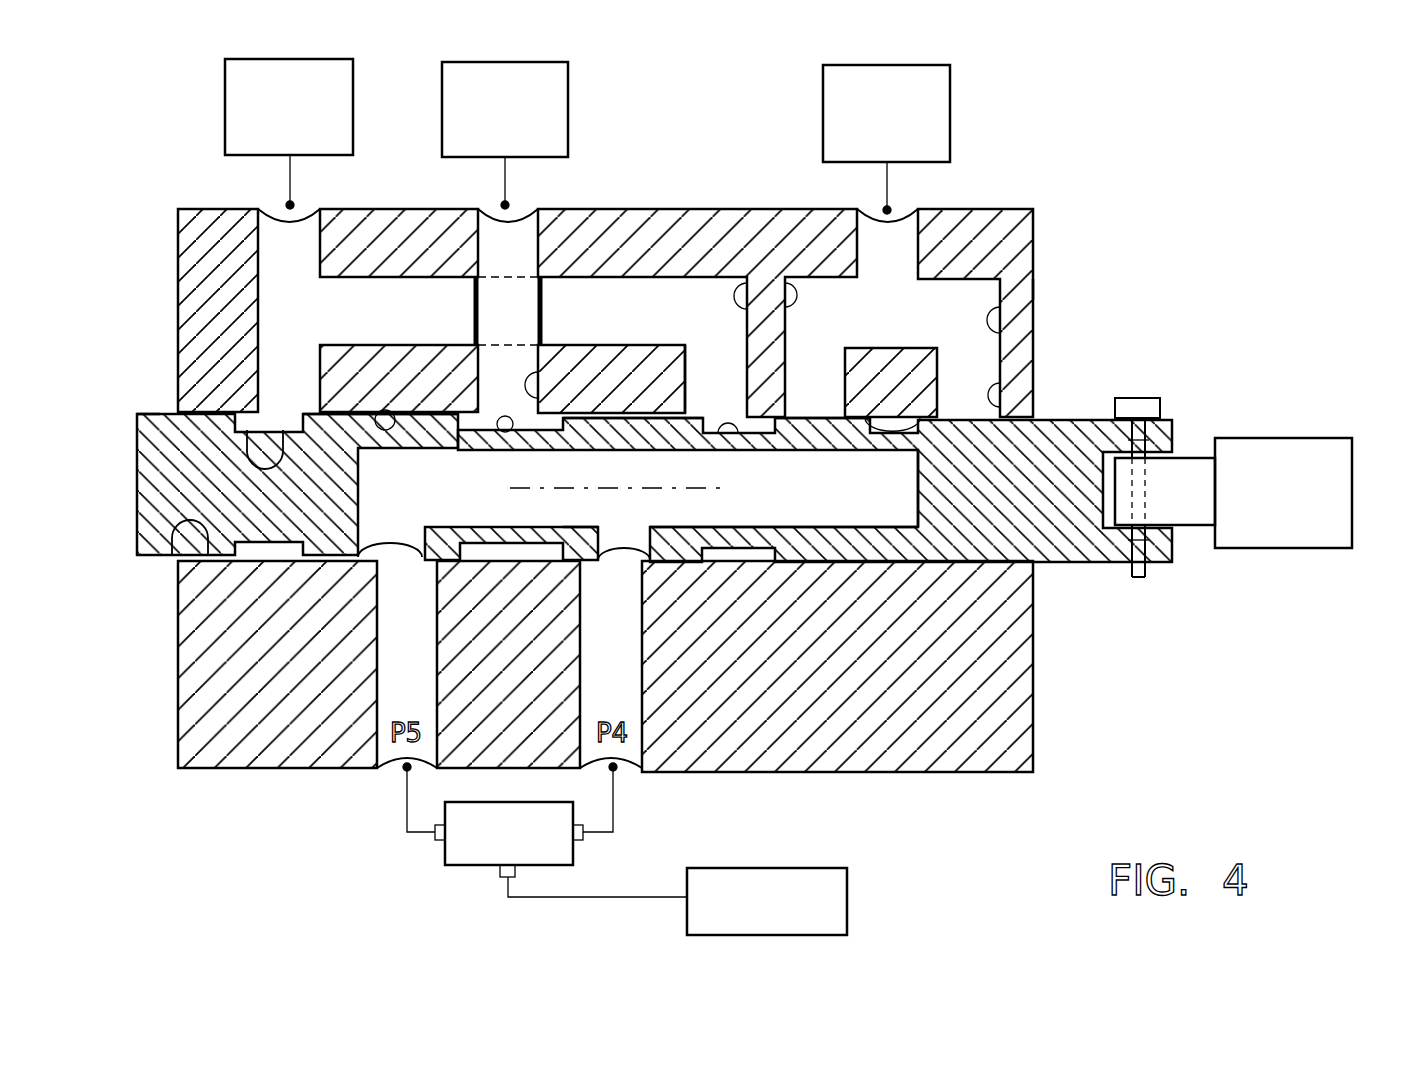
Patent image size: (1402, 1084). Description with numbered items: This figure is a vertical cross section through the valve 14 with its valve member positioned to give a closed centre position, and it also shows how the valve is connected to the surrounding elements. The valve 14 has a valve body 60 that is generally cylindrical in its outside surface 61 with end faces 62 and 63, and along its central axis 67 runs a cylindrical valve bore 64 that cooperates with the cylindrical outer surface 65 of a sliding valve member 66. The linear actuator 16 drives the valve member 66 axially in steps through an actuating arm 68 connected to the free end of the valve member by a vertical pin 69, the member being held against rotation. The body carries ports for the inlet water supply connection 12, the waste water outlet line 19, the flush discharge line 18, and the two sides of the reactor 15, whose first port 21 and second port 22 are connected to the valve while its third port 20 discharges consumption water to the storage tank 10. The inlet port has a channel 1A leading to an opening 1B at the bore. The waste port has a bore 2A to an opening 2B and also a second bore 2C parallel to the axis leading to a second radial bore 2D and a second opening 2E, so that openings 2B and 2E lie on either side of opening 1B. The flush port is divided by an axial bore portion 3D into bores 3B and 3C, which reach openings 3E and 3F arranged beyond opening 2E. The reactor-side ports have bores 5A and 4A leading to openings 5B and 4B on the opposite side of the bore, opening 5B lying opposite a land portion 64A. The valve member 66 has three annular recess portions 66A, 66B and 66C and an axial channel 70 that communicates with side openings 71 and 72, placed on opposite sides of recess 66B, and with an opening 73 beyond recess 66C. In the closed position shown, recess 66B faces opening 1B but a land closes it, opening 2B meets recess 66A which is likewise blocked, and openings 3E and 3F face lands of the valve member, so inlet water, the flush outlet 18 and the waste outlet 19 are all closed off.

The main consumption water storage tank 10 is at (782, 868).
The inlet water supply connection 12 is at (571, 111).
The valve 14 is at (618, 288).
The reactor 15 is at (444, 862).
The actuator 16 is at (1268, 428).
The discharge line 18 is at (955, 125).
The second outlet line 19 is at (224, 103).
The third port 20 is at (505, 878).
The first port 21 is at (585, 838).
The second port 22 is at (434, 832).
The channel 1A is at (493, 216).
The opening 1B is at (540, 374).
The bore 2A is at (268, 216).
The opening 2B is at (312, 398).
The second bore 2C is at (350, 284).
The second radial bore 2D is at (744, 290).
The second opening 2E is at (700, 356).
The bore 3B is at (808, 290).
The bore 3C is at (1035, 328).
The axial bore portion 3D is at (918, 346).
The opening 3E is at (800, 405).
The opening 3F is at (1030, 386).
The bore 4A is at (640, 768).
The opening 4B is at (612, 572).
The bore 5A is at (382, 768).
The opening 5B is at (405, 572).
The valve body 60 is at (1037, 260).
The outside surface 61 is at (713, 208).
The end face 62 is at (177, 258).
The end face 63 is at (1035, 293).
The valve bore 64 is at (174, 556).
The land portion 64A is at (380, 410).
The cylindrical outer surface 65 is at (165, 412).
The sliding valve member 66 is at (724, 524).
The annular recess portion 66A is at (280, 445).
The annular recess portion 66B is at (520, 440).
The annular recess portion 66C is at (738, 438).
The central axis 67 is at (508, 496).
The actuating arm 68 is at (1197, 535).
The vertical pin 69 is at (1131, 389).
The axial channel 70 is at (698, 520).
The opening 71 is at (412, 532).
The opening 72 is at (615, 540).
The opening 73 is at (912, 452).